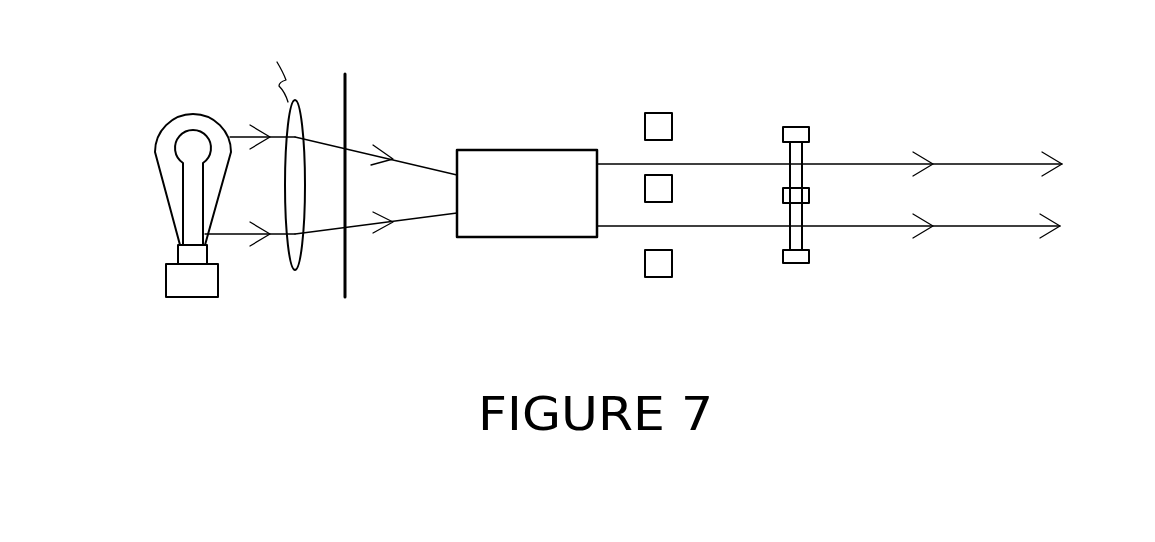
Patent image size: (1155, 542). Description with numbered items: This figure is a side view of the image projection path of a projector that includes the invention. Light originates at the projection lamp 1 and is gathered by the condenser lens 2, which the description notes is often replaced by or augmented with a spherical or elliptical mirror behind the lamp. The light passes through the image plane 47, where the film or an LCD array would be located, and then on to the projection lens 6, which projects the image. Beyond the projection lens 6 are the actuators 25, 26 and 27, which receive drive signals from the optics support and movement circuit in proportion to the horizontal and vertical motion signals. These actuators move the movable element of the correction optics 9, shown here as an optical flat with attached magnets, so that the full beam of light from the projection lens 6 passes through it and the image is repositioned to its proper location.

The projection lamp 1 is at (162, 117).
The condenser lens 2 is at (290, 283).
The image plane 47 is at (358, 287).
The projection lens 6 is at (523, 143).
The actuator 27 is at (678, 122).
The actuator 25 is at (678, 185).
The actuator 26 is at (678, 258).
The correction optics 9 is at (810, 258).